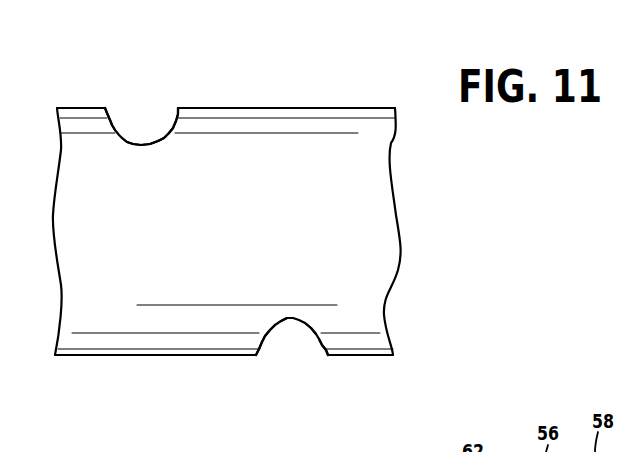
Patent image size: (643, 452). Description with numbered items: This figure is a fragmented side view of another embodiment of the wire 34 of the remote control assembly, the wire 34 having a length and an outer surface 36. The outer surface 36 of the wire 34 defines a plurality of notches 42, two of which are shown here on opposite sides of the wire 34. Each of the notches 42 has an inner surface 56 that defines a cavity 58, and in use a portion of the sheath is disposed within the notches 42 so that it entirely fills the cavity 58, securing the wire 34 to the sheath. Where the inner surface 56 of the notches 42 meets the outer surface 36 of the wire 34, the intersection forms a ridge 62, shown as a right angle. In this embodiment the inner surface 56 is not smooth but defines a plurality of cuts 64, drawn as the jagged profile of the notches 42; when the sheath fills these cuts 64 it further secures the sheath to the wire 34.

The wire 34 is at (97, 213).
The outer surface 36 is at (307, 107).
The notches 42 is at (120, 104).
The inner surface 56 is at (171, 133).
The cavity 58 is at (150, 134).
The ridge 62 is at (107, 108).
The cuts 64 is at (128, 138).